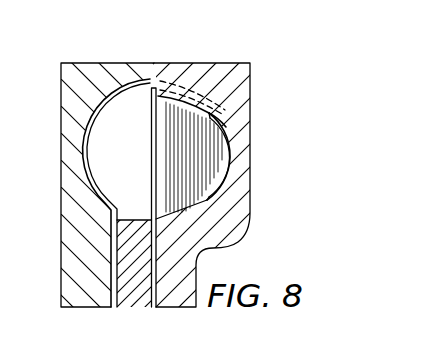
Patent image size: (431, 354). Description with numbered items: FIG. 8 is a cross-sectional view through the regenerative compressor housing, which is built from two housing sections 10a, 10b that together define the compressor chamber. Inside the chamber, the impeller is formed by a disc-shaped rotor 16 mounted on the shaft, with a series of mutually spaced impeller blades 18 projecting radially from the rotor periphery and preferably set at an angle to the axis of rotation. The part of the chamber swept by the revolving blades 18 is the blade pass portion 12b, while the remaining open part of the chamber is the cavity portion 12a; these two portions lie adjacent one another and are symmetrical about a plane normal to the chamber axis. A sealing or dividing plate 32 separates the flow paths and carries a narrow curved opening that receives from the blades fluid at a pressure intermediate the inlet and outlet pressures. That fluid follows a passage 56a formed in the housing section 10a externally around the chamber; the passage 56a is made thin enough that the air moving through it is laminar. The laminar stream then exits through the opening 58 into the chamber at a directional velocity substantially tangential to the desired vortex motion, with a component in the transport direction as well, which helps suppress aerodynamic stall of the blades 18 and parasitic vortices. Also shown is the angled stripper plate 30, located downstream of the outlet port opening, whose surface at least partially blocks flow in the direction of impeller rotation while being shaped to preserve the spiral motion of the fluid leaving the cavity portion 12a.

The housing section 10a is at (217, 73).
The housing section 10b is at (97, 71).
The cavity portion 12a is at (178, 213).
The blade pass portion 12b is at (92, 110).
The rotor 16 is at (137, 297).
The impeller blades 18 is at (137, 146).
The stripper plate 30 is at (168, 145).
The sealing plate 32 is at (144, 157).
The passage 56a is at (229, 132).
The opening 58 is at (197, 181).